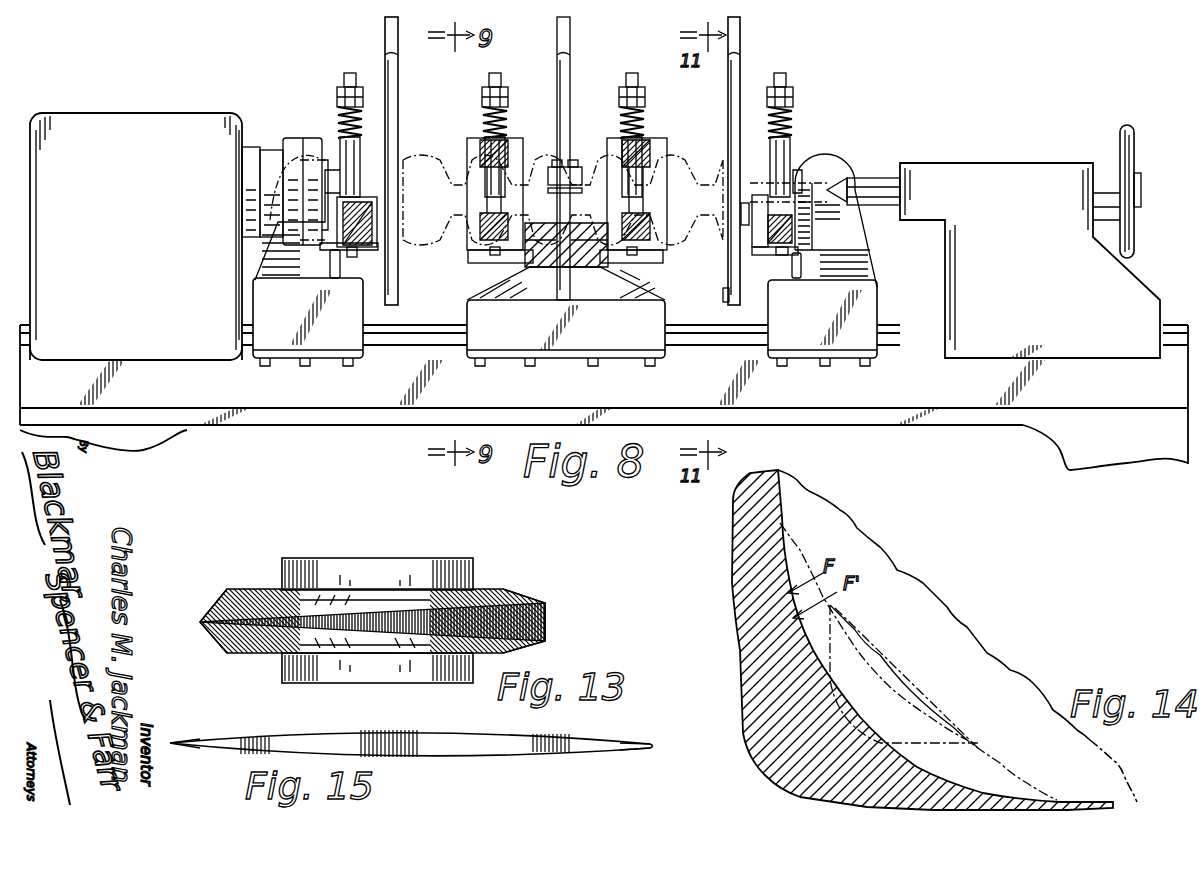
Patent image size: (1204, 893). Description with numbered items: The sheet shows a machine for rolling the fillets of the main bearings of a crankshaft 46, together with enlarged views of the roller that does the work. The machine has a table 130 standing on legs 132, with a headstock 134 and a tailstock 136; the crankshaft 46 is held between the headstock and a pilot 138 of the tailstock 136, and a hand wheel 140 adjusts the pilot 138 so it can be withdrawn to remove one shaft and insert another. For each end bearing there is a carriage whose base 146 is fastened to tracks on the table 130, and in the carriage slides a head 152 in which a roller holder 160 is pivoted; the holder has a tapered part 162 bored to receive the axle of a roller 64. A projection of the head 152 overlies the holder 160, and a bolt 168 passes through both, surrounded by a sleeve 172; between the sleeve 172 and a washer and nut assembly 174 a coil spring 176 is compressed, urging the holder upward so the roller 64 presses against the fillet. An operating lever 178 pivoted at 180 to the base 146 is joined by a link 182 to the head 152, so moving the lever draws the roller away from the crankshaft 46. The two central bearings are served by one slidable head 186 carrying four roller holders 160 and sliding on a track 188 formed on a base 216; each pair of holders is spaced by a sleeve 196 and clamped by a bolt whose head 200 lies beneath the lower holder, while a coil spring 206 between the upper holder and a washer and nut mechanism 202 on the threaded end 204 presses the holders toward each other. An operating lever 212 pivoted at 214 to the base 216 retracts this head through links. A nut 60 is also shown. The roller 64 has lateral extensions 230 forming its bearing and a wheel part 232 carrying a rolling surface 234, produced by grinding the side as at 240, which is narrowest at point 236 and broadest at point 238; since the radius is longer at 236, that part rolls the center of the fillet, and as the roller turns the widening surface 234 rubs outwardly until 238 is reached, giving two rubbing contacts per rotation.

In FIG. 8, the crankshaft 46 is at (428, 164).
In FIG. 14, the crankshaft 46 is at (768, 758).
In FIG. 8, the nut 60 is at (783, 258).
In FIG. 8, the roller 64 is at (368, 240).
In FIG. 13, the roller 64 is at (326, 565).
In FIG. 8, the table 130 is at (247, 403).
In FIG. 8, the legs 132 is at (147, 437).
In FIG. 8, the headstock 134 is at (142, 132).
In FIG. 8, the tailstock 136 is at (1000, 180).
In FIG. 8, the pilot 138 is at (845, 186).
In FIG. 8, the hand wheel 140 is at (1125, 140).
In FIG. 8, the carriage base 146 is at (350, 330).
In FIG. 8, the slidable head 152 is at (333, 240).
In FIG. 8, the roller holder 160 is at (482, 245).
In FIG. 8, the tapered part 162 is at (500, 145).
In FIG. 8, the bolt 168 is at (783, 76).
In FIG. 8, the sleeve 172 is at (790, 147).
In FIG. 8, the washer and nut assembly 174 is at (791, 97).
In FIG. 8, the coil spring 176 is at (790, 120).
In FIG. 8, the operating lever 178 is at (390, 58).
In FIG. 8, the pivot 180 is at (723, 294).
In FIG. 8, the link 182 is at (745, 222).
In FIG. 8, the slidable head 186 is at (612, 158).
In FIG. 8, the track 188 is at (590, 270).
In FIG. 8, the sleeve 196 is at (566, 170).
In FIG. 8, the bolt head 200 is at (492, 262).
In FIG. 8, the washer and nut mechanism 202 is at (485, 95).
In FIG. 8, the threaded end 204 is at (498, 86).
In FIG. 8, the coil spring 206 is at (500, 121).
In FIG. 8, the operating lever 212 is at (569, 57).
In FIG. 8, the pivot 214 is at (568, 270).
In FIG. 8, the base 216 is at (470, 303).
In FIG. 13, the lateral extensions 230 is at (370, 572).
In FIG. 13, the wheel part 232 is at (500, 588).
In FIG. 13, the rolling surface 234 is at (535, 608).
In FIG. 13, the narrowest point 236 is at (199, 620).
In FIG. 15, the narrowest point 236 is at (172, 741).
In FIG. 14, the narrowest point 236 is at (887, 743).
In FIG. 13, the broadest point 238 is at (548, 622).
In FIG. 15, the broadest point 238 is at (415, 754).
In FIG. 14, the broadest point 238 is at (830, 540).
In FIG. 13, the ground-off side 240 is at (241, 620).